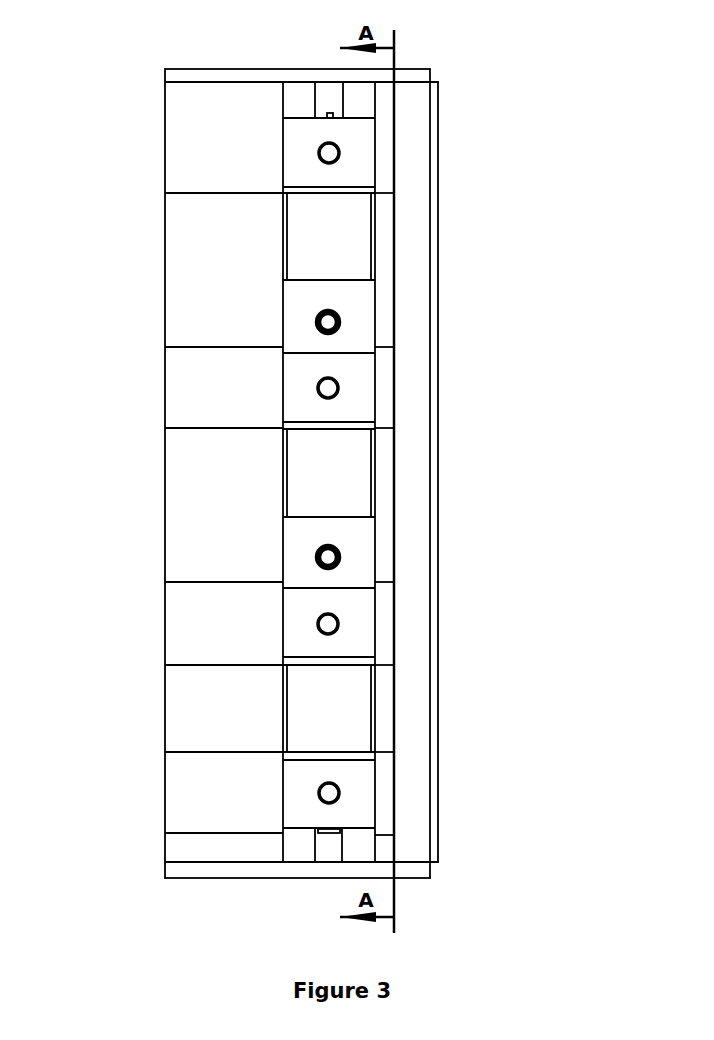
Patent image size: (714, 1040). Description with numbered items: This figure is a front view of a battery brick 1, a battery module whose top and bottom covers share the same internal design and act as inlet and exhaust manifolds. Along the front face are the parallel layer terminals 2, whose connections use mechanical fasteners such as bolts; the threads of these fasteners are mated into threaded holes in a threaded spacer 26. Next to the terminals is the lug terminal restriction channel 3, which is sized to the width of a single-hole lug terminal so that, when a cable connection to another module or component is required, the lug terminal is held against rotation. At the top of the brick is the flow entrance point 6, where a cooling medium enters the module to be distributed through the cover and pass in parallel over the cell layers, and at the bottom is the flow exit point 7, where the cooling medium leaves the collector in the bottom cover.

The battery brick 1 is at (158, 315).
The parallel layer terminal 2 is at (307, 792).
The lug terminal restriction channel 3 is at (198, 623).
The flow entrance point 6 is at (320, 98).
The flow exit point 7 is at (323, 847).
The threaded spacer 26 is at (338, 703).